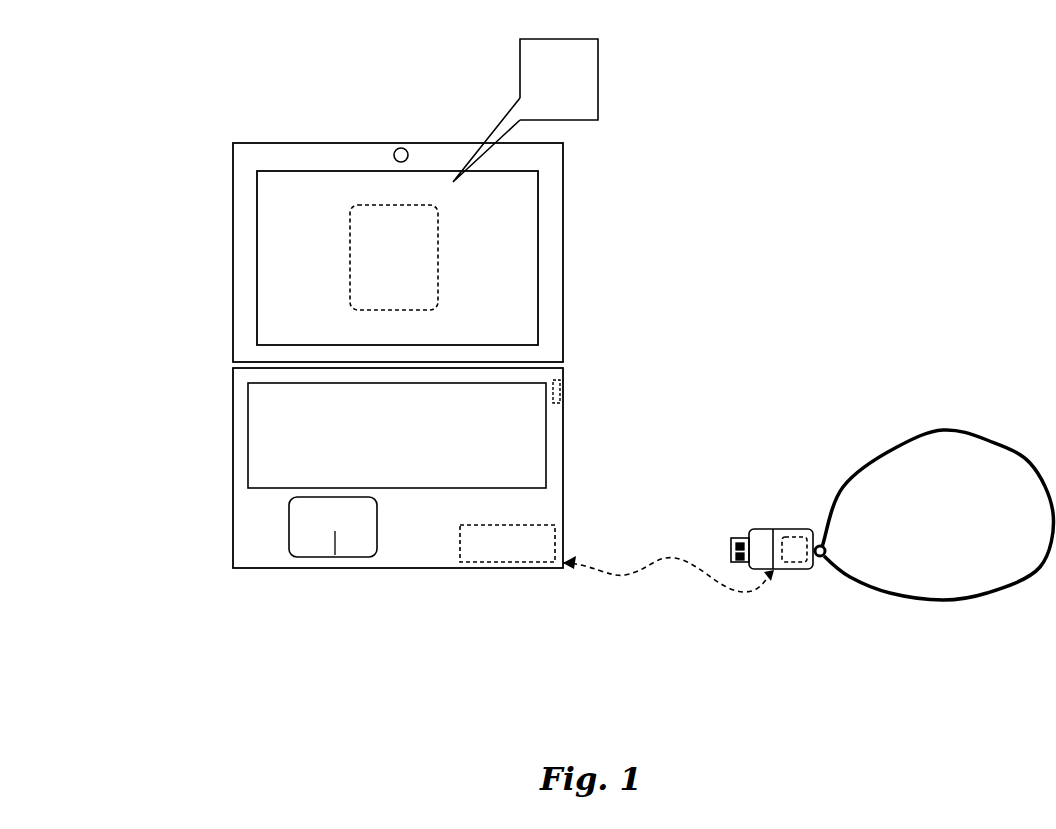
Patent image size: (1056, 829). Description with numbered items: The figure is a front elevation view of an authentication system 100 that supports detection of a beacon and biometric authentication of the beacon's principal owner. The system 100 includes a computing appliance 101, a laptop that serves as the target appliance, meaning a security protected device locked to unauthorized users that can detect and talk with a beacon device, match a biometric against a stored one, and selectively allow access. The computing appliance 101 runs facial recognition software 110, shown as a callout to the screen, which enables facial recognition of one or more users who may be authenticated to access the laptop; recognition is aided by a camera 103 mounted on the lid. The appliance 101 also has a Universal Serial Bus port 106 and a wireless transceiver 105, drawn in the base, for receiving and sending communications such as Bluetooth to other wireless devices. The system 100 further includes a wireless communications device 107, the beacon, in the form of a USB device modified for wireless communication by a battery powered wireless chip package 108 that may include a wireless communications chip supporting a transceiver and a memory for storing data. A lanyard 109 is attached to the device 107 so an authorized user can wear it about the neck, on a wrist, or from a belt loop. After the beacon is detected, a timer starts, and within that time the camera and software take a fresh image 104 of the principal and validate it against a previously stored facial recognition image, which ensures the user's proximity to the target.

The authentication system 100 is at (800, 198).
The computing appliance 101 is at (233, 463).
The camera 103 is at (401, 147).
The image 104 is at (438, 254).
The wireless transceiver (RX/TX) 105 is at (507, 525).
The Universal Serial Bus (USB) port 106 is at (563, 393).
The wireless communications device (beacon) 107 is at (793, 570).
The wireless chip package 108 is at (792, 532).
The lanyard 109 is at (947, 427).
The facial recognition software (FRSW) 110 is at (598, 82).